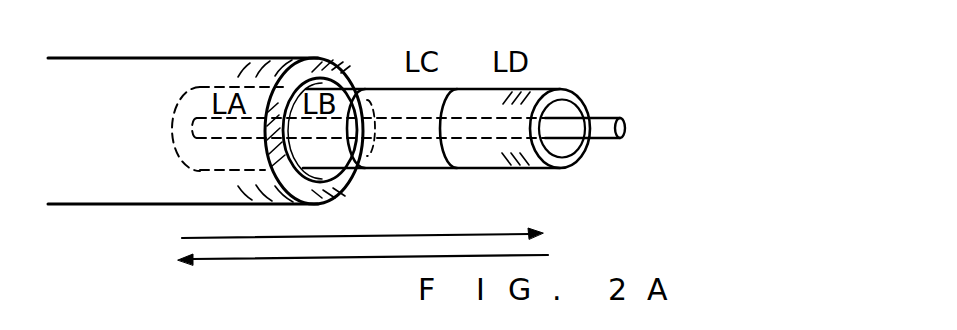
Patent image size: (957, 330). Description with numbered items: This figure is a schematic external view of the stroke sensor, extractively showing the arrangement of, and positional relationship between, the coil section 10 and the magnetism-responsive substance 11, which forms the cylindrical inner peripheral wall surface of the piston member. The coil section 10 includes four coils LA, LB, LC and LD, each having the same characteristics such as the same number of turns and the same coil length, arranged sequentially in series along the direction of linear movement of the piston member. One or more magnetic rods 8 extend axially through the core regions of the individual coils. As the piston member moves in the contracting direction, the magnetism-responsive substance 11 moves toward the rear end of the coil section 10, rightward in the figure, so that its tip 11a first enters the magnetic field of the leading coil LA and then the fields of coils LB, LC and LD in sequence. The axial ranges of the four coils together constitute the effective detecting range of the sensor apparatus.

The magnetism-responsive substance 11 is at (222, 68).
The tip of the magnetism-responsive substance 11a is at (347, 66).
The coil section 10 is at (459, 172).
The magnetic rod 8 is at (624, 131).